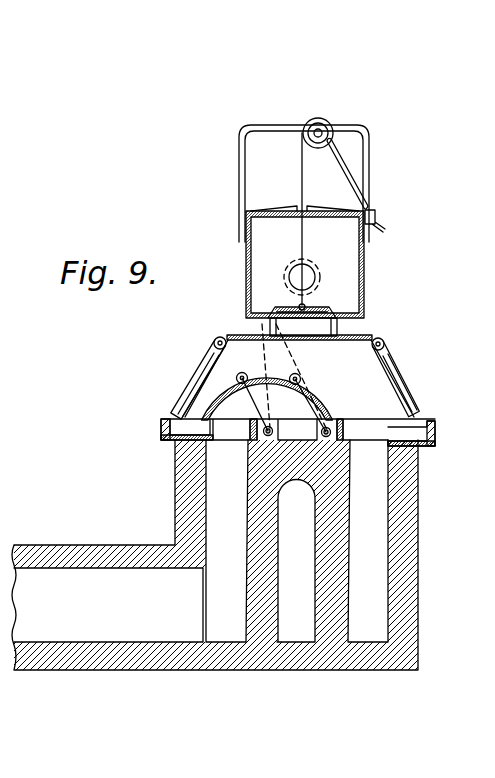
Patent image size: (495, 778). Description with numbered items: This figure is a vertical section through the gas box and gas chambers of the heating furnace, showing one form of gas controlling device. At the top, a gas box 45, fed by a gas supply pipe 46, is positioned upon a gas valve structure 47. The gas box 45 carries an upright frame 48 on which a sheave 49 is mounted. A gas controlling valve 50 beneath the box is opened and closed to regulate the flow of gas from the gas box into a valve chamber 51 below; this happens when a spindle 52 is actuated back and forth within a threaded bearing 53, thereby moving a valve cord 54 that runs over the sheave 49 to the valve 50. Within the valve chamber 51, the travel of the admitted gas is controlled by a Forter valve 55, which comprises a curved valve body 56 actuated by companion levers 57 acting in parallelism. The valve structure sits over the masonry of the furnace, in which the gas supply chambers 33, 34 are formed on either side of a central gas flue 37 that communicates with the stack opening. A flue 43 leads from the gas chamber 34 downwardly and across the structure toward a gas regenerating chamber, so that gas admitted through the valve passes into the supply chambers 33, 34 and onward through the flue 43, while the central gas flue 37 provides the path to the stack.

The gas supply chamber 33 is at (372, 526).
The gas supply chamber 34 is at (227, 498).
The central gas flue 37 is at (296, 547).
The flue 43 is at (108, 605).
The gas box 45 is at (362, 270).
The gas supply pipe 46 is at (290, 266).
The gas valve structure 47 is at (237, 337).
The upright frame 48 is at (365, 128).
The sheave 49 is at (320, 120).
The gas controlling valve 50 is at (315, 310).
The valve chamber 51 is at (380, 387).
The spindle 52 is at (352, 176).
The threaded bearing 53 is at (380, 215).
The valve cord 54 is at (302, 168).
The Forter valve 55 is at (366, 420).
The curved valve body 56 is at (217, 390).
The companion levers 57 is at (267, 380).